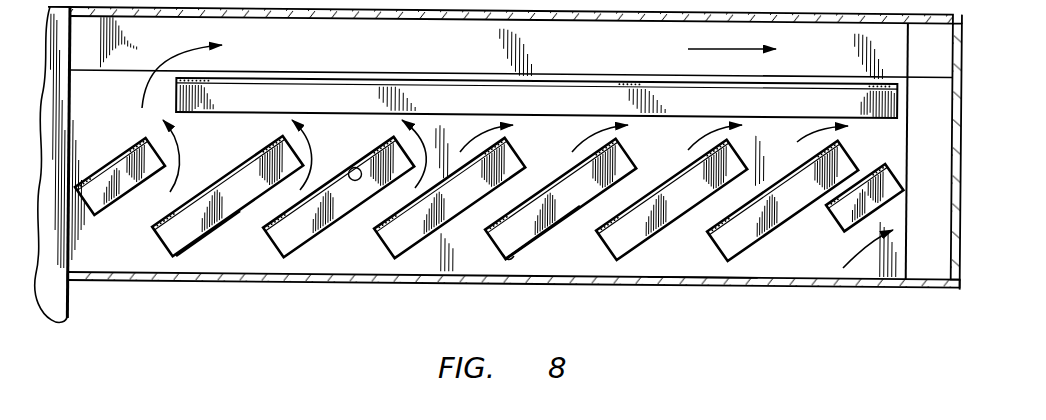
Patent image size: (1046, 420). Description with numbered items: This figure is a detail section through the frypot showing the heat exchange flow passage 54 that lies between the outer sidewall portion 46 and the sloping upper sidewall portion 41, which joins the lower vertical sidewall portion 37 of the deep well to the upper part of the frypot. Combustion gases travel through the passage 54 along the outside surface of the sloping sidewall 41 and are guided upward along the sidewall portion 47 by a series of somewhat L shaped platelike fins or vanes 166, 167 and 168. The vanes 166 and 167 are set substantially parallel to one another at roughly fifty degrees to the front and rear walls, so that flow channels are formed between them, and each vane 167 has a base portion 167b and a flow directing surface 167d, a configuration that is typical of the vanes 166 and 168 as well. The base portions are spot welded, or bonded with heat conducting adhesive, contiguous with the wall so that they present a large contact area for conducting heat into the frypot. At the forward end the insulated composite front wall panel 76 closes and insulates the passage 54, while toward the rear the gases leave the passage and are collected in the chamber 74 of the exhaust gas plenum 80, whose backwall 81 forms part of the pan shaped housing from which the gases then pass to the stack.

The lower vertical sidewall portion 37 is at (408, 286).
The sloping upper sidewall portion 41 is at (705, 262).
The outer sidewall portion 46 is at (283, 21).
The sidewall portion 47 is at (591, 56).
The heat exchange flow passage 54 is at (553, 148).
The chamber 74 is at (938, 188).
The insulated composite front wall panel 76 is at (58, 282).
The exhaust gas plenum 80 is at (918, 292).
The backwall 81 is at (958, 292).
The vane 166 is at (115, 185).
The vane 167 is at (237, 197).
The base portion 167b is at (300, 248).
The flow directing surface 167d is at (352, 168).
The vane 168 is at (460, 93).